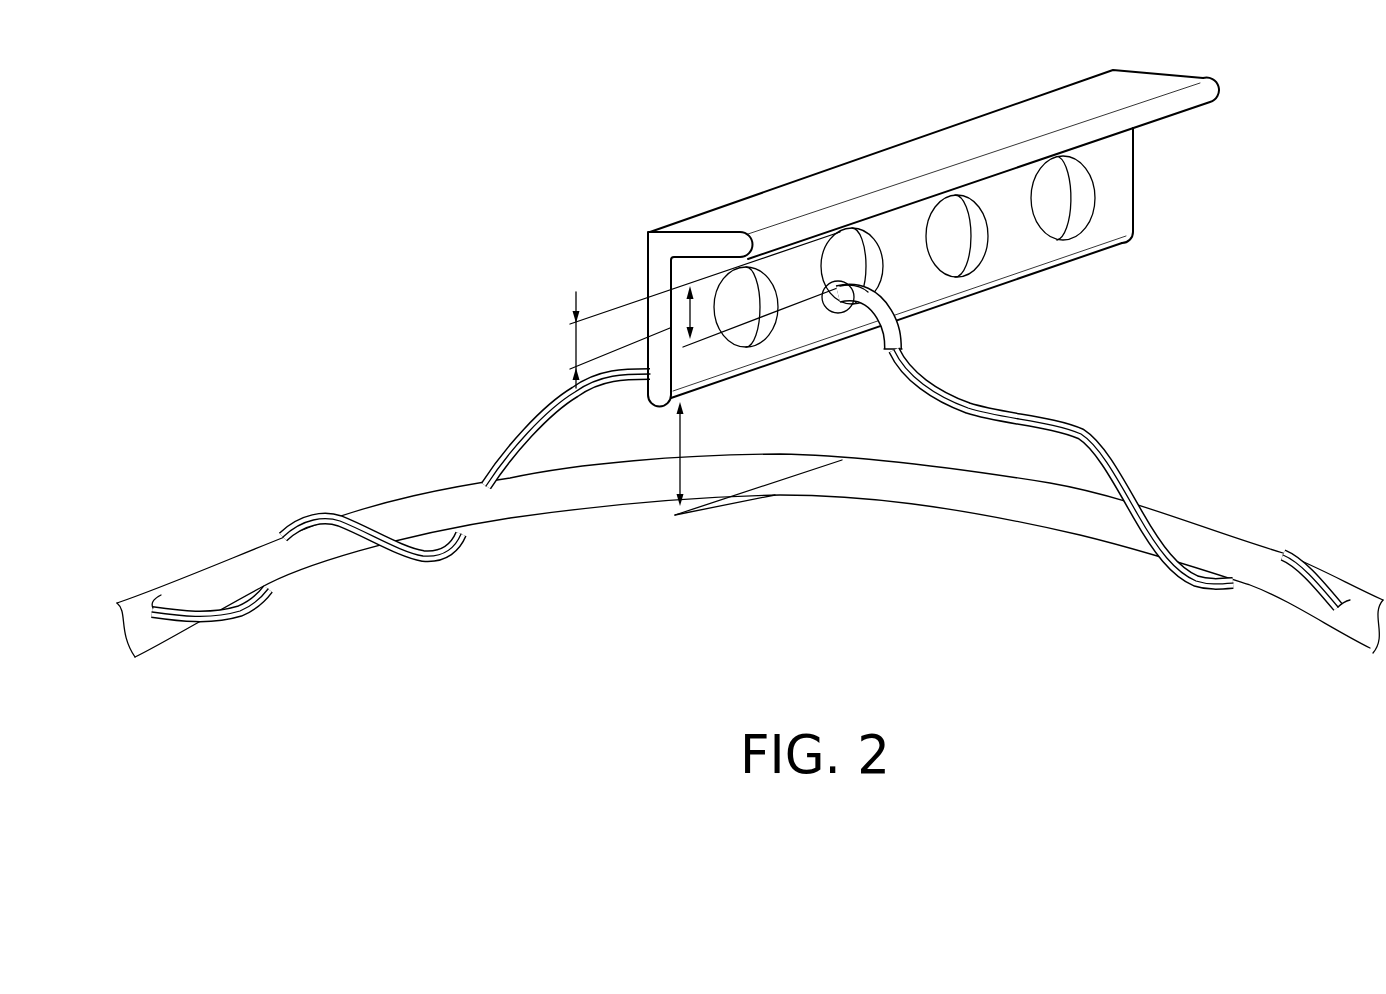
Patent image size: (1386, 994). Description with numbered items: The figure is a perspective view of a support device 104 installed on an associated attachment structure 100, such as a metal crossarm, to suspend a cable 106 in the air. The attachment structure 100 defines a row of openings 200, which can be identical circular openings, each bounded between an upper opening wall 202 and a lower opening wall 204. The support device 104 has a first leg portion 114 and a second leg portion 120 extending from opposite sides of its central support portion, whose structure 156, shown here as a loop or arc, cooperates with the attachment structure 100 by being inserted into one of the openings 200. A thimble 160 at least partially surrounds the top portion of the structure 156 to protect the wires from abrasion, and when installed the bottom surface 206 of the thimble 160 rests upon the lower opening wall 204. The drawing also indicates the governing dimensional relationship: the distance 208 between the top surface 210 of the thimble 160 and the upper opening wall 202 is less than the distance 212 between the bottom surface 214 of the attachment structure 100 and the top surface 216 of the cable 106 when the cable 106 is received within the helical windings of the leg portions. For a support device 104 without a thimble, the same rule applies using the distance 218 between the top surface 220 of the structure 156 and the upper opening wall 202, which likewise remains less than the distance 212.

The associated attachment structure 100 is at (1137, 160).
The support device 104 is at (993, 587).
The cable 106 is at (520, 517).
The first leg portion 114 is at (313, 517).
The second leg portion 120 is at (1093, 438).
The structure 156 is at (897, 258).
The thimble 160 is at (900, 316).
The opening 200 is at (1076, 199).
The upper opening wall 202 is at (965, 224).
The lower opening wall 204 is at (955, 260).
The bottom surface of the thimble 206 is at (848, 322).
The distance 208 is at (574, 345).
The top surface of the thimble 210 is at (862, 278).
The distance 212 is at (677, 448).
The bottom surface of the associated attachment structure 214 is at (1117, 253).
The top surface of the cable 216 is at (848, 458).
The distance 218 is at (687, 313).
The top surface of the structure 220 is at (840, 280).